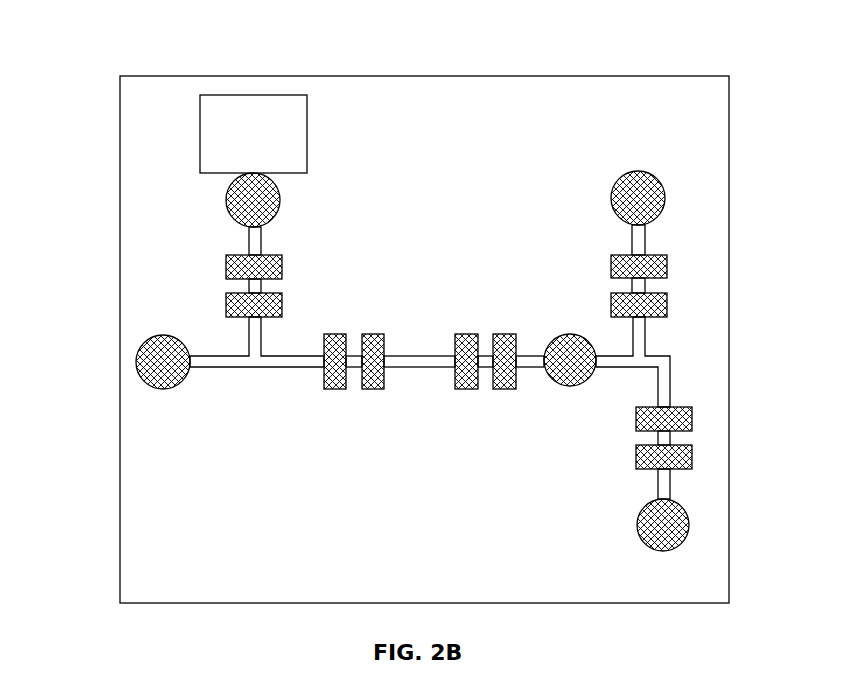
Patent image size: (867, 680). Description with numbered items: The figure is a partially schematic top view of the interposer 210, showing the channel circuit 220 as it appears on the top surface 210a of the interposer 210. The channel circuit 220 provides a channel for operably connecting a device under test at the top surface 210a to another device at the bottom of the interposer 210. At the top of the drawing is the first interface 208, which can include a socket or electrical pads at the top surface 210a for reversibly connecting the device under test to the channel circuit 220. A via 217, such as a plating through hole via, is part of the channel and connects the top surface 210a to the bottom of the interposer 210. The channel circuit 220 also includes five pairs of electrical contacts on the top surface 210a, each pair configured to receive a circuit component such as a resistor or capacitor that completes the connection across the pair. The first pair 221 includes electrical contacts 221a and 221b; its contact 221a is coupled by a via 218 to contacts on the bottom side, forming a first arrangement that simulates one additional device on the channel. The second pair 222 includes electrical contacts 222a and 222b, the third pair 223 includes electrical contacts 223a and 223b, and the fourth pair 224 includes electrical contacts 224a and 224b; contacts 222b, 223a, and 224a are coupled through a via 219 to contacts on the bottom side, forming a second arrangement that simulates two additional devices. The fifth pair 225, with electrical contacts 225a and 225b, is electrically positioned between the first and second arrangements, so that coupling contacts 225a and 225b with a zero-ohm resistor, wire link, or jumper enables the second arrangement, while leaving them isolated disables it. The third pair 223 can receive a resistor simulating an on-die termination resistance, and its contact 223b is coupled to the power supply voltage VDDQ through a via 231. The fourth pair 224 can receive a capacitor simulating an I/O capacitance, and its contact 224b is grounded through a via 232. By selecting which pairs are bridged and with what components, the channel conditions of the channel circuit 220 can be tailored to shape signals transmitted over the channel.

The interposer 210 is at (663, 76).
The top surface 210a is at (155, 93).
The first interface 208 is at (253, 134).
The via 217 is at (137, 362).
The via 218 is at (226, 200).
The via 219 is at (570, 387).
The channel circuit 220 is at (452, 195).
The first pair of electrical contacts 221 is at (182, 248).
The electrical contact 221a is at (226, 267).
The electrical contact 221b is at (226, 305).
The second pair of electrical contacts 222 is at (484, 362).
The electrical contact 222a is at (466, 334).
The electrical contact 222b is at (500, 334).
The third pair of electrical contacts 223 is at (689, 261).
The electrical contact 223a is at (668, 305).
The electrical contact 223b is at (668, 267).
The fourth pair of electrical contacts 224 is at (696, 420).
The electrical contact 224a is at (693, 418).
The electrical contact 224b is at (693, 457).
The fifth pair of electrical contacts 225 is at (355, 370).
The electrical contact 225a is at (333, 389).
The electrical contact 225b is at (374, 389).
The via 231 is at (665, 198).
The via 232 is at (690, 525).